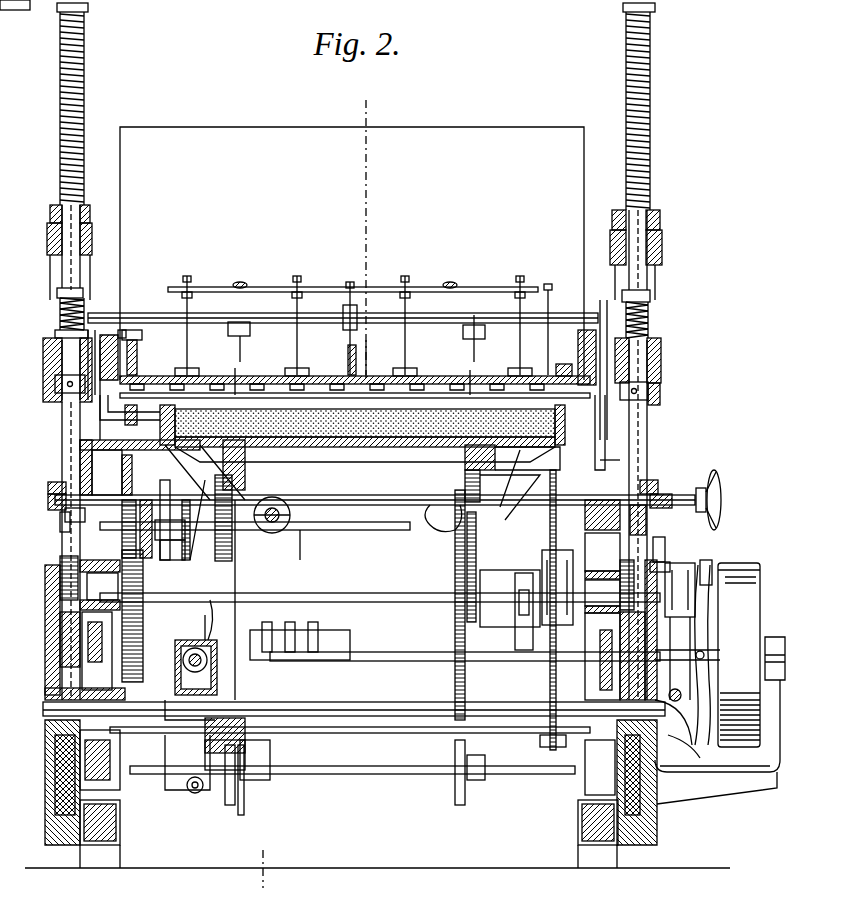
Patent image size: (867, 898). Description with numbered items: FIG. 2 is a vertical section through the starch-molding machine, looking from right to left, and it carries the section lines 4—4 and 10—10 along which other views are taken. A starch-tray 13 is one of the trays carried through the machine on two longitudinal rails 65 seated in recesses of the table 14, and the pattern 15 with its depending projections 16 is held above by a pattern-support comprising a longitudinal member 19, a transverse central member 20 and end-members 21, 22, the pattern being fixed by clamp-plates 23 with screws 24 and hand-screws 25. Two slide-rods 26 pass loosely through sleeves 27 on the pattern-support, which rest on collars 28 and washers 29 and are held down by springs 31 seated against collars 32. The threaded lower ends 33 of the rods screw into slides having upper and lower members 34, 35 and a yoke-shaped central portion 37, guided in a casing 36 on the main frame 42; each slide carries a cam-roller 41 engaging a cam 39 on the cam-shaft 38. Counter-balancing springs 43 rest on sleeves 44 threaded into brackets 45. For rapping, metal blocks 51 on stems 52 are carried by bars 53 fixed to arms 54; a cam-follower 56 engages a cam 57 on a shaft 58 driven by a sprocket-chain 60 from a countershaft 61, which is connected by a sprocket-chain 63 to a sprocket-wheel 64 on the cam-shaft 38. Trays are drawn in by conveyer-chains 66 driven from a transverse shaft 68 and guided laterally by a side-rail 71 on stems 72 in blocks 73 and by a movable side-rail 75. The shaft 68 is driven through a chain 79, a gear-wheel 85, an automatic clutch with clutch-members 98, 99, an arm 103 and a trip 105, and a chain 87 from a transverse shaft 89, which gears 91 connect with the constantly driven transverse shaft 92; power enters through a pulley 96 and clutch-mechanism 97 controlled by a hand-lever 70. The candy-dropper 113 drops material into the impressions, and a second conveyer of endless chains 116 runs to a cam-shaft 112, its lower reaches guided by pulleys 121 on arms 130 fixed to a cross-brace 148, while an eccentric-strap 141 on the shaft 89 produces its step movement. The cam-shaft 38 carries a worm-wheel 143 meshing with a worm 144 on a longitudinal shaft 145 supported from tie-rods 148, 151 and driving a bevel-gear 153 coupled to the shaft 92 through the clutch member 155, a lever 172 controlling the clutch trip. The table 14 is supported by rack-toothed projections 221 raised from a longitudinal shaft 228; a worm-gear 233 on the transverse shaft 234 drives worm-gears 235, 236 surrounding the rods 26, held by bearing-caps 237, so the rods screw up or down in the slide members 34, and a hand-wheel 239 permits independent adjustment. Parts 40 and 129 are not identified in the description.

The section line 4— 4 is at (374, 119).
The section line 10— 10 is at (150, 470).
The starch-tray 13 is at (560, 432).
The table 14 is at (512, 452).
The pattern 15 is at (258, 376).
The depending projections 16 is at (165, 376).
The longitudinal member 19 is at (378, 357).
The transverse central member 20 is at (348, 370).
The end-member 21 is at (560, 370).
The end-member 22 is at (140, 350).
The clamp-plates 23 is at (70, 417).
The screws 24 is at (112, 366).
The hand-screws 25 is at (118, 332).
The slide-rods 26 is at (63, 447).
The sleeves 27 is at (44, 361).
The collars 28 is at (660, 400).
The washers 29 is at (650, 390).
The springs 31 is at (650, 325).
The collars 32 is at (651, 128).
The threaded lower ends 33 is at (46, 580).
The upper slide member 34 is at (60, 598).
The lower slide member 35 is at (50, 810).
The casing 36 is at (60, 655).
The yoke-shaped central portion 37 is at (60, 680).
The cam-shaft 38 is at (50, 716).
The cam 39 is at (580, 758).
The motor base 40 is at (670, 742).
The cam-roller 41 is at (55, 760).
The main frame 42 is at (350, 672).
The counter-balancing spring 43 is at (85, 110).
The sleeve 44 is at (50, 225).
The bracket 45 is at (50, 277).
The metal blocks 51 is at (195, 366).
The stems 52 is at (190, 300).
The parallel bars 53 is at (206, 287).
The arms 54 is at (246, 282).
The cam-follower 56 is at (346, 292).
The cam 57 is at (343, 312).
The shaft 58 is at (250, 332).
The sprocket-chain 60 is at (480, 337).
The countershaft 61 is at (549, 300).
The sprocket-chain 63 is at (549, 523).
The sprocket-wheel 64 is at (548, 695).
The longitudinal rails 65 is at (250, 440).
The conveyer-chains 66 is at (190, 560).
The transverse shaft 68 is at (380, 530).
The hand-lever 70 is at (130, 400).
The side-rail 71 is at (565, 418).
The stems 72 is at (620, 436).
The blocks 73 is at (600, 432).
The movable side-rail 75 is at (137, 416).
The chain 79 is at (122, 472).
The gear-wheel 85 is at (122, 540).
The chain 87 is at (217, 500).
The transverse shaft 89 is at (383, 602).
The gears 91 is at (143, 616).
The transverse shaft 92 is at (436, 652).
The pulley 96 is at (739, 655).
The clutch-mechanism 97 is at (710, 575).
The clutch-member 98 is at (66, 520).
The second clutch-member 99 is at (185, 526).
The arm 103 is at (185, 548).
The trip 105 is at (104, 586).
The cam-shaft 112 is at (396, 540).
The candy-dropper 113 is at (352, 253).
The endless chains 116 is at (466, 682).
The pulleys 121 is at (240, 815).
The bracket 129 is at (666, 552).
The arms 130 is at (225, 800).
The eccentric-strap 141 is at (517, 631).
The worm-wheel 143 is at (195, 792).
The worm 144 is at (180, 706).
The longitudinal shaft 145 is at (205, 690).
The tie-rod 148 is at (385, 776).
The tie-rod 151 is at (390, 734).
The bevel-gear 153 is at (205, 625).
The clutch member 155 is at (305, 632).
The lever 172 is at (262, 748).
The downward projections 221 is at (502, 492).
The shaft 228 is at (285, 530).
The worm-gear 233 is at (350, 506).
The transverse shaft 234 is at (441, 518).
The worm-gear 235 is at (52, 490).
The worm-gear 236 is at (52, 500).
The bearing-caps 237 is at (58, 522).
The hand-wheel 239 is at (722, 496).